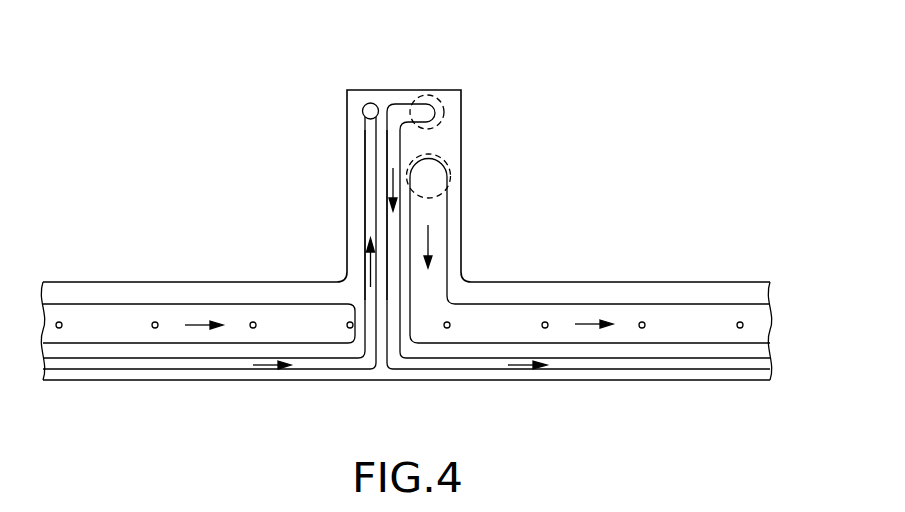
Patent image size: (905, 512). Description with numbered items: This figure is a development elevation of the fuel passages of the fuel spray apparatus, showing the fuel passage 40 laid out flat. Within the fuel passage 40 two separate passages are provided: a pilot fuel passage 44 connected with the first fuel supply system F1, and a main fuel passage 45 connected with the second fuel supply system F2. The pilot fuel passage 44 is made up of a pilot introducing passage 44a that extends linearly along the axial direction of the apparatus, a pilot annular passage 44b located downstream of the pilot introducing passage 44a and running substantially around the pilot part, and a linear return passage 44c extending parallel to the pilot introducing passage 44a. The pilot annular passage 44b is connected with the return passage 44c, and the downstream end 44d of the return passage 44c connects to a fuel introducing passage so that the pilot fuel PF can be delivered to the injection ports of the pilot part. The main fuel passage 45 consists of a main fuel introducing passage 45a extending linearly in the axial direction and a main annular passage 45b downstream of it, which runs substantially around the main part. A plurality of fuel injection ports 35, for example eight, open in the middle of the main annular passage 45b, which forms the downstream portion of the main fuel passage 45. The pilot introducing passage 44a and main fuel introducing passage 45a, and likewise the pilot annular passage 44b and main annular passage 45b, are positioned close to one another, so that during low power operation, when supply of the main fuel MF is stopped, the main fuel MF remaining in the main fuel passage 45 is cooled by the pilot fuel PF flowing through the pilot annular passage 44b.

The fuel passage 40 is at (703, 282).
The fuel injection ports 35 is at (155, 328).
The pilot fuel passage 44 is at (406, 227).
The pilot introducing passage 44a is at (387, 153).
The pilot annular passage 44b is at (307, 343).
The return passage 44c is at (365, 178).
The downstream end 44d is at (363, 106).
The main fuel passage 45 is at (590, 251).
The main fuel introducing passage 45a is at (448, 268).
The main annular passage 45b is at (618, 304).
The first fuel supply system F1 is at (433, 95).
The second fuel supply system F2 is at (450, 155).
The main fuel MF is at (198, 322).
The pilot fuel PF is at (263, 368).